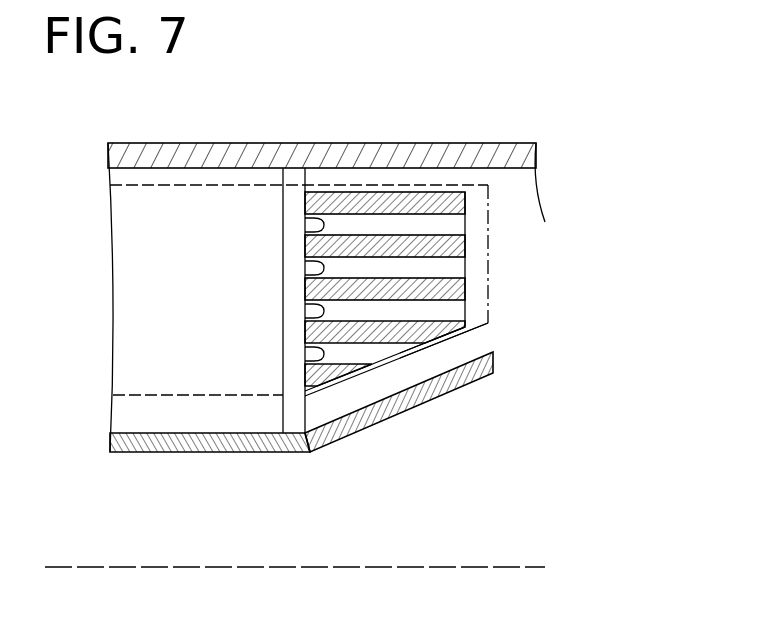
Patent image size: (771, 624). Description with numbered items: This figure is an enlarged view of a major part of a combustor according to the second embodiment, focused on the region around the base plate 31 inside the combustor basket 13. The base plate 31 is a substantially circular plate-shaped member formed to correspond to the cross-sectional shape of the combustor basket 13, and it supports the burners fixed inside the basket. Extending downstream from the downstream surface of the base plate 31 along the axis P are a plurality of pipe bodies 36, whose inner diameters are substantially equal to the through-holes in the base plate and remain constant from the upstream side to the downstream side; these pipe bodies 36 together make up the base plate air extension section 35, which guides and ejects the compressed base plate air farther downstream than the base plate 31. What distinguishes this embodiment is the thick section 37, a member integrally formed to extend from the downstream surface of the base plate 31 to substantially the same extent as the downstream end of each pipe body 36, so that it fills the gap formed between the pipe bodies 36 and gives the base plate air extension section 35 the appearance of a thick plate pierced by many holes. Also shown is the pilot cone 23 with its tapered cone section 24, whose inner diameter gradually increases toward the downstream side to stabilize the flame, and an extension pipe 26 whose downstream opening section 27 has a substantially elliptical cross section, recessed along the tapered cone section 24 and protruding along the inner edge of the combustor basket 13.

The combustor basket 13 is at (337, 157).
The pilot cone 23 is at (183, 435).
The tapered cone section 24 is at (358, 407).
The extension pipe 26 is at (482, 328).
The opening section 27 is at (488, 303).
The base plate 31 is at (292, 405).
The base plate air extension section 35 is at (233, 285).
The pipe body 36 is at (304, 229).
The thick section 37 is at (450, 203).
The axis P is at (90, 565).